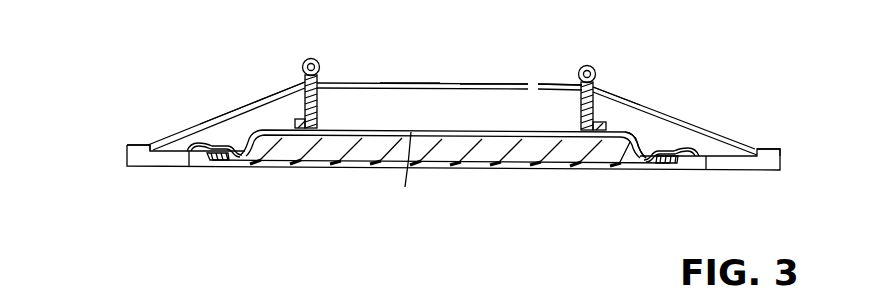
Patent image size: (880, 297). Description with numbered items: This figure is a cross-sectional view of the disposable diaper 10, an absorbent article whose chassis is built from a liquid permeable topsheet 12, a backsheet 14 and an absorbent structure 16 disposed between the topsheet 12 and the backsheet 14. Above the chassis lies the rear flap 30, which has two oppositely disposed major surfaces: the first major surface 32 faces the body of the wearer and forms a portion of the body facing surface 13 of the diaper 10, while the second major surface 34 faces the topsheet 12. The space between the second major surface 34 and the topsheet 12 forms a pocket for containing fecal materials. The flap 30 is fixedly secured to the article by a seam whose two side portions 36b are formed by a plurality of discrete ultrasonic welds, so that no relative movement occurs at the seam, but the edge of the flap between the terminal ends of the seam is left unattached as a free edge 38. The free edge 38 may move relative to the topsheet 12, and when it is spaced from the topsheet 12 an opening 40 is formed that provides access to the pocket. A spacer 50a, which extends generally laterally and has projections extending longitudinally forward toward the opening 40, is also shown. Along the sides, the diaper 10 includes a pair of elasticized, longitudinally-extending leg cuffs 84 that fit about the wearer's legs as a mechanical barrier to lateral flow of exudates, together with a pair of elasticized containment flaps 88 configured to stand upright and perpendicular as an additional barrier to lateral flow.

The disposable diaper 10 is at (136, 110).
The topsheet 12 is at (267, 127).
The body facing surface 13 is at (445, 82).
The backsheet 14 is at (358, 168).
The absorbent structure 16 is at (448, 147).
The rear flap 30 is at (205, 122).
The first major surface 32 is at (487, 82).
The second major surface 34 is at (620, 118).
The side portions of the seam 36b is at (140, 145).
The free edge 38 is at (278, 90).
The opening 40 is at (411, 82).
The spacer 50a is at (404, 171).
The leg cuffs 84 is at (192, 153).
The containment flaps 88 is at (306, 59).